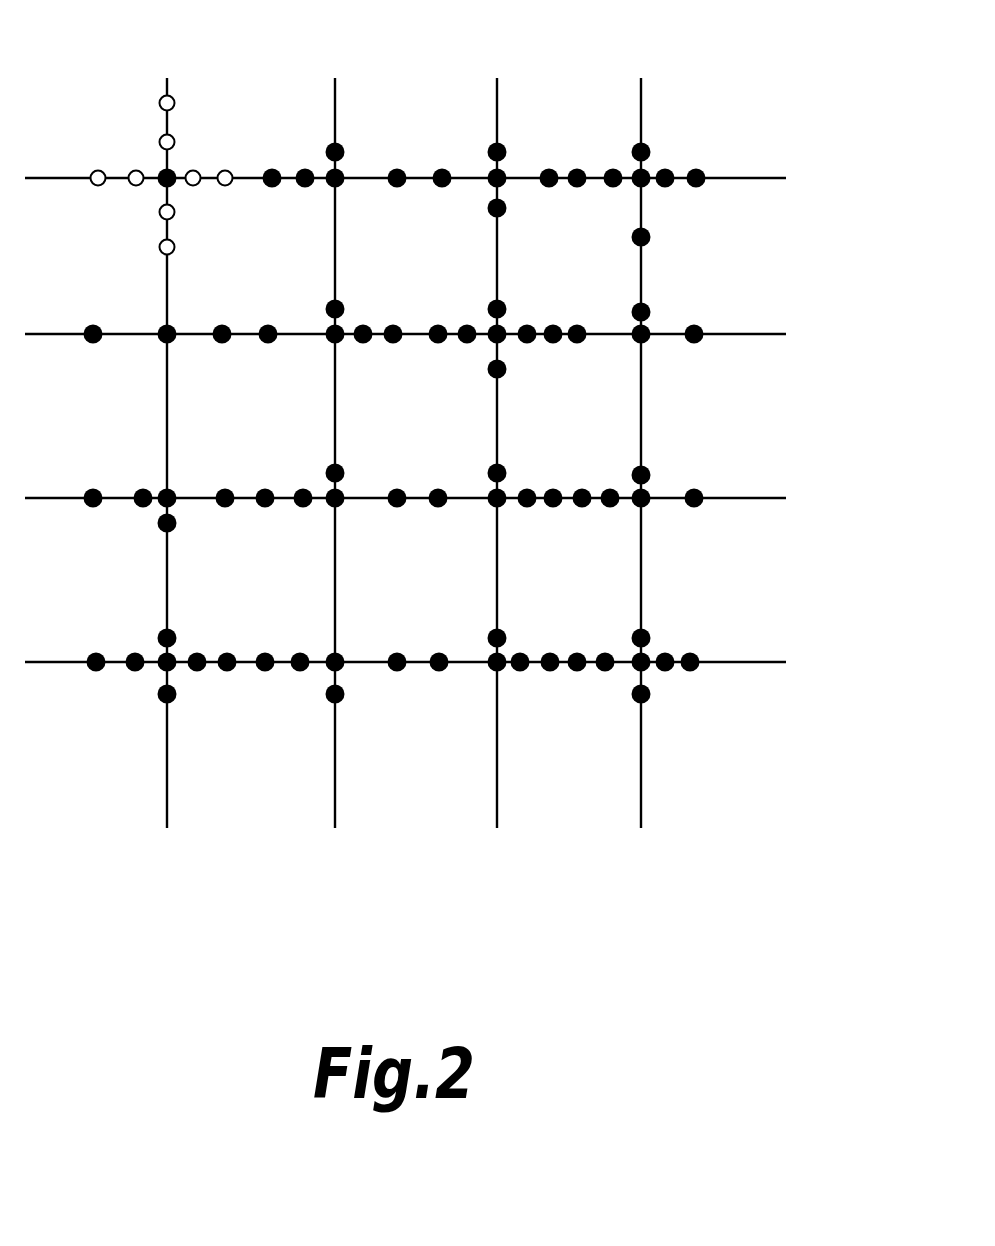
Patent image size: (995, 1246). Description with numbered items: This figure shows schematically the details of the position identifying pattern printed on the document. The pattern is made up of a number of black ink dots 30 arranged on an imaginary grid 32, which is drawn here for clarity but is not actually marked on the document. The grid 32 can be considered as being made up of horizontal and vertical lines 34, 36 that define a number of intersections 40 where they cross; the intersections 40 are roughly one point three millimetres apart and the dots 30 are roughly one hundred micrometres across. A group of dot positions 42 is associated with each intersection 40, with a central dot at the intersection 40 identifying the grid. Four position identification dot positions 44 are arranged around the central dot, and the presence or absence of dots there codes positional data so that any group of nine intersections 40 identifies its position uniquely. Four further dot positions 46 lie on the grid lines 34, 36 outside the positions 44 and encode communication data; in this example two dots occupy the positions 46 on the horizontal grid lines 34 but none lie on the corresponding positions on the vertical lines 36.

The black ink dots 30 is at (345, 148).
The imaginary grid 32 is at (498, 112).
The horizontal lines 34 is at (723, 177).
The vertical lines 36 is at (641, 112).
The intersections 40 is at (650, 187).
The group of dot positions 42 is at (154, 101).
The position identification dot positions 44 is at (159, 212).
The further dot positions 46 is at (225, 170).